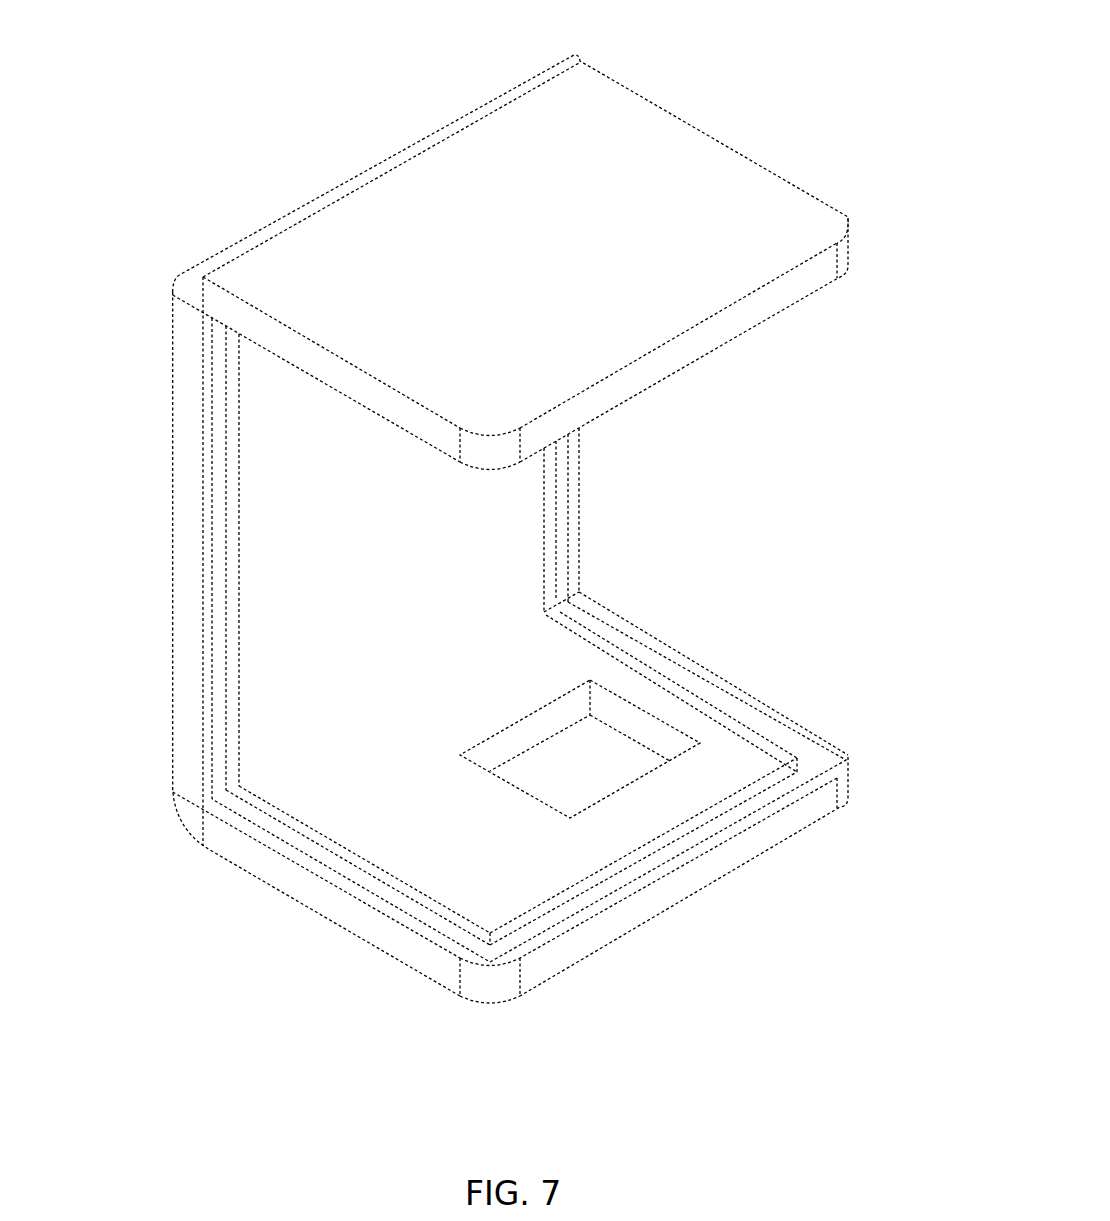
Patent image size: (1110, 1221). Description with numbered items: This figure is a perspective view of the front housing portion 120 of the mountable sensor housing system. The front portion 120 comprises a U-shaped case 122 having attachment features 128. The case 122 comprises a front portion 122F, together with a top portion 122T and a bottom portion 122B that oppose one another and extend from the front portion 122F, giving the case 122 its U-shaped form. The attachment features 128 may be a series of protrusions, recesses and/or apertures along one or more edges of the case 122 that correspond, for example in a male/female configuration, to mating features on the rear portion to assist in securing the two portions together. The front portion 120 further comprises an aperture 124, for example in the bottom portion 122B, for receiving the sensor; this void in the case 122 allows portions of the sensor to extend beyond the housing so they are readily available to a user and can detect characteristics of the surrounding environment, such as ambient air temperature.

The front housing portion 120 is at (464, 517).
The U-shaped case 122 is at (480, 517).
The top portion 122T is at (583, 137).
The bottom portion 122B is at (382, 820).
The front portion 122F is at (275, 518).
The aperture 124 is at (638, 708).
The attachment features 128 is at (220, 385).